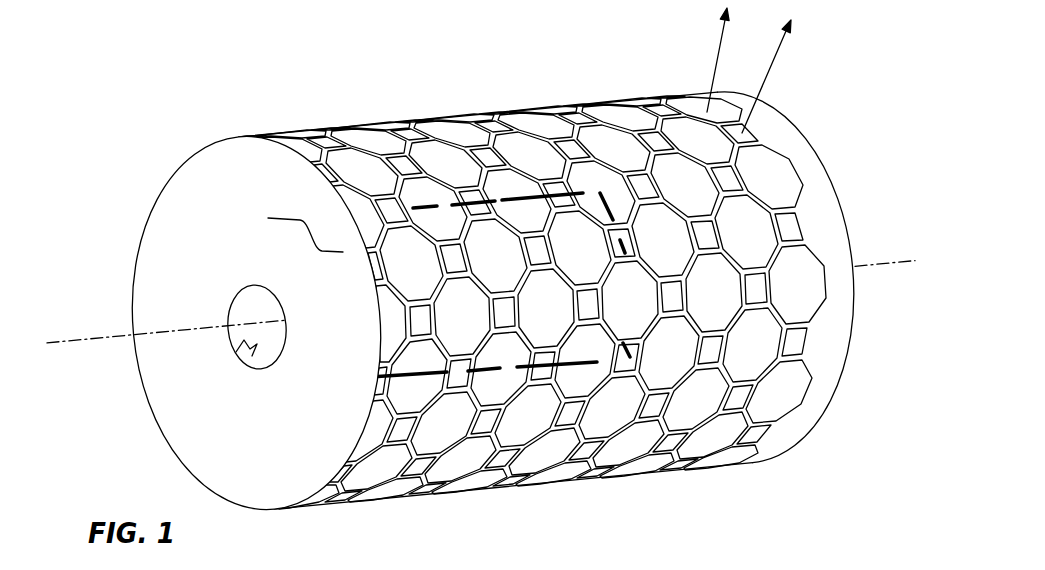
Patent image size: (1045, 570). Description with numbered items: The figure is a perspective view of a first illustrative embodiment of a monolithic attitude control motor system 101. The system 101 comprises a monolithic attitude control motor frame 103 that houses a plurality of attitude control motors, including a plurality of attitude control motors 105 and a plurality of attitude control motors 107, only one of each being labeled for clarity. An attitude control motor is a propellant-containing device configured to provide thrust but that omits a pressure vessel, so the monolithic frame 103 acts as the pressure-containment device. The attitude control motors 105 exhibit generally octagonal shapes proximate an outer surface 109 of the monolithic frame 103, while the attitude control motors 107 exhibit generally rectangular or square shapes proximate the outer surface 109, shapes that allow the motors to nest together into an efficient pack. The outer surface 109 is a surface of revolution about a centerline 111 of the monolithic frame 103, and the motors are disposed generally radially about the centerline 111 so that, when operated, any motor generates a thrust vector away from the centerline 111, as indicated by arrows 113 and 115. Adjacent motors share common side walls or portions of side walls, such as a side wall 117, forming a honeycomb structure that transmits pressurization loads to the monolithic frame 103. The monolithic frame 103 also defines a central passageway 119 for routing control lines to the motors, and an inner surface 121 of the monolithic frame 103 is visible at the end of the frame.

The monolithic attitude control motor system 101 is at (277, 110).
The monolithic attitude control motor frame 103 is at (200, 407).
The attitude control motor 105 is at (807, 262).
The attitude control motor 107 is at (768, 290).
The outer surface 109 is at (822, 392).
The centerline 111 is at (188, 334).
The arrow 113 is at (713, 55).
The arrow 115 is at (770, 72).
The side wall 117 is at (780, 278).
The central passageway 119 is at (253, 305).
The inner surface 121 is at (236, 352).